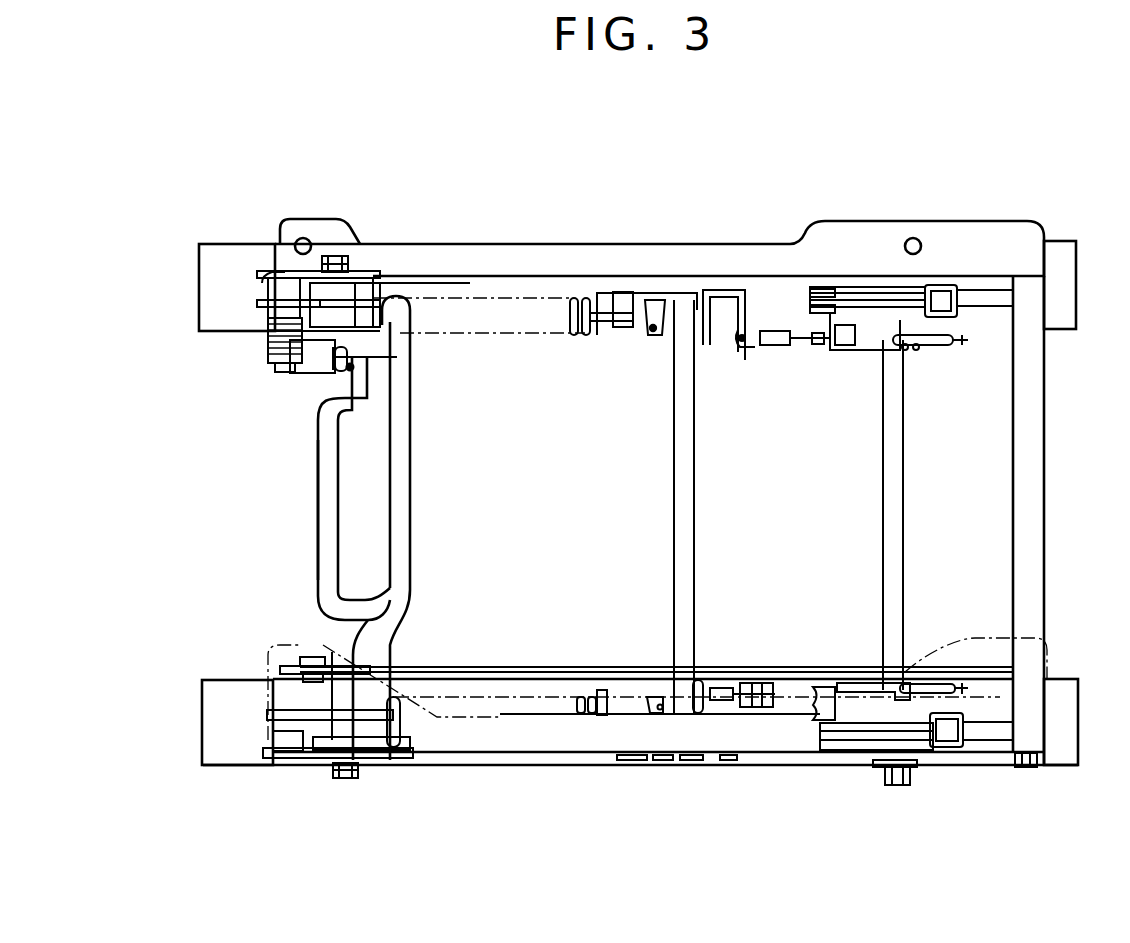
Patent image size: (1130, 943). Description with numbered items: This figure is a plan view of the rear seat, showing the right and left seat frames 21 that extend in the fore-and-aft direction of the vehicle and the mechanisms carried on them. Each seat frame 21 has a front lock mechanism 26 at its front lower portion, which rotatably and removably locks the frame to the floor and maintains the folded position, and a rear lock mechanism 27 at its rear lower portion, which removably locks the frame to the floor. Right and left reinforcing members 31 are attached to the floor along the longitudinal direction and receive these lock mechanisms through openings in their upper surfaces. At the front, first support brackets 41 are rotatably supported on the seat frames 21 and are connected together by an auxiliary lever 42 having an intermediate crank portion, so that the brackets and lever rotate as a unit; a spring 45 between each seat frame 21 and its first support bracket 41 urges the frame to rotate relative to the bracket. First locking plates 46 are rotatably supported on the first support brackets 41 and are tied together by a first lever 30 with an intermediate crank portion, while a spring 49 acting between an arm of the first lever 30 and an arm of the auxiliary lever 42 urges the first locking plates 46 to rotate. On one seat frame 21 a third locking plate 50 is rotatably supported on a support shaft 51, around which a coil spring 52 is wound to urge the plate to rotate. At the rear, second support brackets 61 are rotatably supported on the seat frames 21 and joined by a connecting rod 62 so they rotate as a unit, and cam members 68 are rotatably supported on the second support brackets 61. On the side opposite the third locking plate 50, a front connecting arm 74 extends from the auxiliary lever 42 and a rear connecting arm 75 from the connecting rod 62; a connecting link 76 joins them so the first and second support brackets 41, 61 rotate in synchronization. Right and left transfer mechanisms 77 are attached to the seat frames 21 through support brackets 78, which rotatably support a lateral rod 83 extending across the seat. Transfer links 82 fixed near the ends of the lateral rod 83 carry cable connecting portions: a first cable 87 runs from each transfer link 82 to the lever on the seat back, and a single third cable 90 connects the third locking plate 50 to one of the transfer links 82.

The seat frame 21 is at (990, 235).
The front lock mechanism 26 is at (262, 367).
The rear lock mechanism 27 is at (938, 365).
The first lever 30 is at (327, 518).
The reinforcing member 31 is at (1060, 285).
The first support bracket 41 is at (372, 280).
The auxiliary lever 42 is at (412, 510).
The spring 45 is at (513, 308).
The first locking plate 46 is at (346, 252).
The spring 49 is at (320, 362).
The third locking plate 50 is at (292, 247).
The support shaft 51 is at (283, 370).
The coil spring 52 is at (266, 350).
The second support bracket 61 is at (868, 315).
The connecting rod 62 is at (895, 530).
The cam member 68 is at (832, 295).
The front connecting arm 74 is at (316, 673).
The rear connecting arm 75 is at (870, 682).
The connecting link 76 is at (550, 676).
The transfer mechanism 77 is at (655, 350).
The support bracket 78 is at (720, 285).
The transfer link 82 is at (652, 292).
The lateral rod 83 is at (686, 485).
The first cable 87 is at (777, 328).
The third cable 90 is at (650, 332).